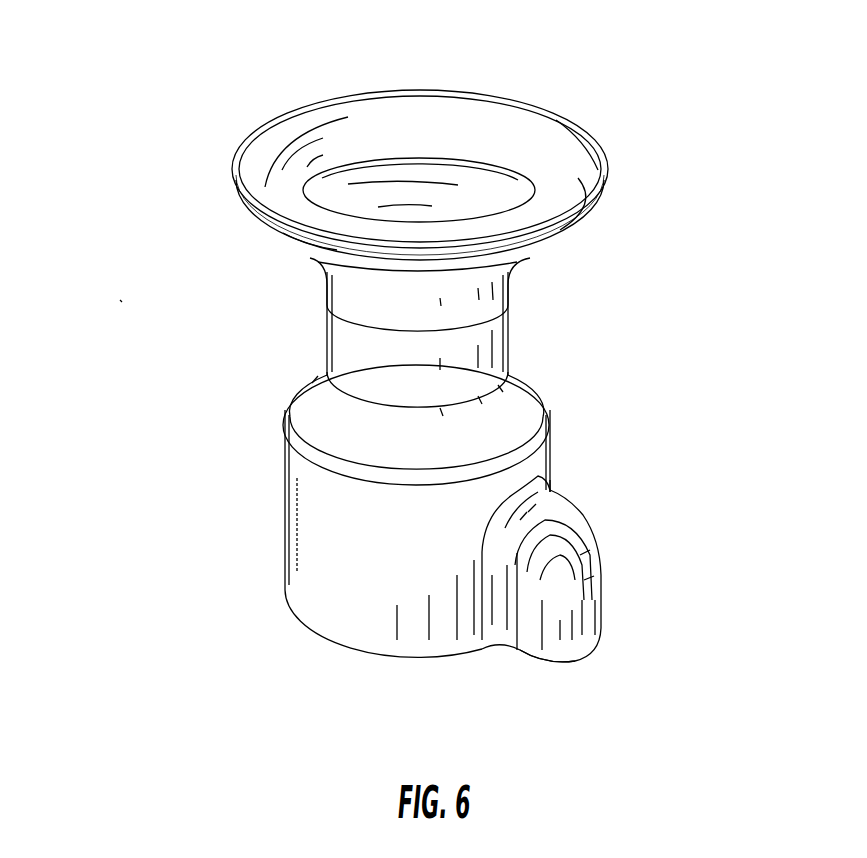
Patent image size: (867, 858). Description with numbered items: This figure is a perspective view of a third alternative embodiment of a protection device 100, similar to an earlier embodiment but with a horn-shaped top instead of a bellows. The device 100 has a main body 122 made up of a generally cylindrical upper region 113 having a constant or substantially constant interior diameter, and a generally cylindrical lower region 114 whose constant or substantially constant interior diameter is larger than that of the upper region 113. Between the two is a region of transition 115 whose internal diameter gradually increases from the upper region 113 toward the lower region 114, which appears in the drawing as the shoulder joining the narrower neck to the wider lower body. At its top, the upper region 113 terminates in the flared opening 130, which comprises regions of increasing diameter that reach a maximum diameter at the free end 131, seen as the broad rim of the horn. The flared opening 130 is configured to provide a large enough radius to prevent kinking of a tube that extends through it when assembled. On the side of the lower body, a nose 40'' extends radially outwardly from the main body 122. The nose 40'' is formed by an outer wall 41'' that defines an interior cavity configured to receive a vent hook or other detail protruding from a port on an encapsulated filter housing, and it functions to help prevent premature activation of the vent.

The protection device 100 is at (89, 266).
The flared opening 130 is at (420, 160).
The free end 131 is at (412, 154).
The upper region 113 is at (455, 339).
The region of transition 115 is at (376, 433).
The lower region 114 is at (408, 544).
The main body 122 is at (616, 473).
The nose 40'' is at (583, 569).
The outer wall 41'' is at (543, 682).